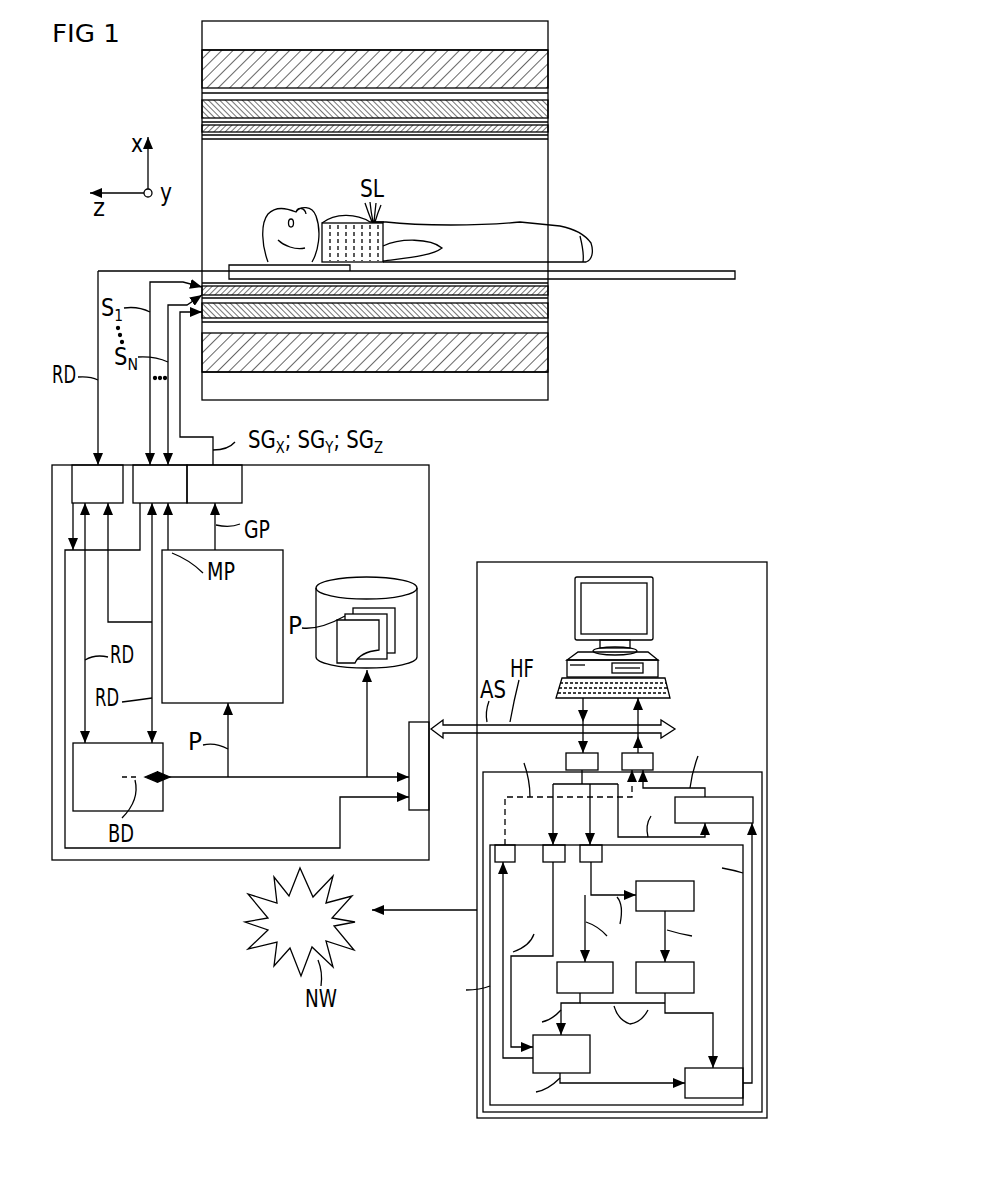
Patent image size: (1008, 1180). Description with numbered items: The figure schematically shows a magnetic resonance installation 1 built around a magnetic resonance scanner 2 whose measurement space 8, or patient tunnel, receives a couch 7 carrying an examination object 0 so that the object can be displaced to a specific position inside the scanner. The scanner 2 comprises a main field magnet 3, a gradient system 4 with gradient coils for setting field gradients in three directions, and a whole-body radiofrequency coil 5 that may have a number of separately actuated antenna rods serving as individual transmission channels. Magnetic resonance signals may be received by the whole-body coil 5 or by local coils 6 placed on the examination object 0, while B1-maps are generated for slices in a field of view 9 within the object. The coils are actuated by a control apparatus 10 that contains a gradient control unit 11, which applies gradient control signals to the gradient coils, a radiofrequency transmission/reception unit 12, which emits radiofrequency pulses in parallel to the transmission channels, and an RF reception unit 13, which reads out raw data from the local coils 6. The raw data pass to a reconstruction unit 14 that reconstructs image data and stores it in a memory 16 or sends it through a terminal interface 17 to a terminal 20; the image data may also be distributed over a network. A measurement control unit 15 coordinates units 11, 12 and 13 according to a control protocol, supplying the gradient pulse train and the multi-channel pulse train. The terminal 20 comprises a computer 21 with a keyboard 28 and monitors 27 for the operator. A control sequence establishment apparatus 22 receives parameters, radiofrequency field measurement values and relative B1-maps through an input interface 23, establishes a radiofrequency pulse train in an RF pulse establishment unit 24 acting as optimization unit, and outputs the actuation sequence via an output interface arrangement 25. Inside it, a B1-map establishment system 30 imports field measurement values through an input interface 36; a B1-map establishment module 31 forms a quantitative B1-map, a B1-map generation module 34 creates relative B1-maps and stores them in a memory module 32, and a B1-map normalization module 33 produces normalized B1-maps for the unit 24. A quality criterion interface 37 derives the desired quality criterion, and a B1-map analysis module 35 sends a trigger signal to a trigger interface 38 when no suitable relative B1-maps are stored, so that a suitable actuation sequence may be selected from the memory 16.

The magnetic resonance installation 1 is at (634, 66).
The magnetic resonance scanner 2 is at (548, 36).
The main field magnet 3 is at (548, 70).
The gradient system 4 is at (548, 108).
The whole-body radiofrequency coil 5 is at (548, 134).
The local coils 6 is at (352, 222).
The couch 7 is at (632, 279).
The measurement space 8 is at (540, 190).
The field of view 9 is at (381, 222).
The examination object 0 is at (592, 242).
The control apparatus 10 is at (429, 522).
The gradient control unit 11 is at (232, 487).
The radiofrequency transmission/reception unit 12 is at (142, 465).
The RF reception unit 13 is at (86, 465).
The reconstruction unit 14 is at (163, 796).
The measurement control unit 15 is at (262, 705).
The memory 16 is at (367, 577).
The terminal interface 17 is at (414, 722).
The terminal 20 is at (622, 562).
The computer 21 is at (658, 666).
The control sequence establishment apparatus 22 is at (477, 930).
The input interface 23 is at (574, 753).
The RF pulse establishment unit 24 is at (735, 797).
The output interface arrangement 25 is at (655, 753).
The monitors 27 is at (653, 608).
The keyboard 28 is at (670, 690).
The B1-map establishment system 30 is at (483, 957).
The B1-map establishment module 31 is at (557, 980).
The memory module 32 is at (694, 985).
The B1-map normalization module 33 is at (685, 1078).
The B1-map generation module 34 is at (694, 896).
The B1-map analysis module 35 is at (533, 1068).
The input interface 36 is at (588, 845).
The quality criterion interface 37 is at (553, 845).
The trigger interface 38 is at (514, 868).